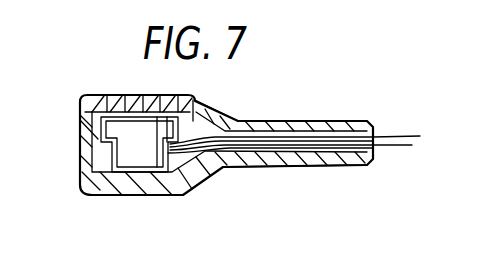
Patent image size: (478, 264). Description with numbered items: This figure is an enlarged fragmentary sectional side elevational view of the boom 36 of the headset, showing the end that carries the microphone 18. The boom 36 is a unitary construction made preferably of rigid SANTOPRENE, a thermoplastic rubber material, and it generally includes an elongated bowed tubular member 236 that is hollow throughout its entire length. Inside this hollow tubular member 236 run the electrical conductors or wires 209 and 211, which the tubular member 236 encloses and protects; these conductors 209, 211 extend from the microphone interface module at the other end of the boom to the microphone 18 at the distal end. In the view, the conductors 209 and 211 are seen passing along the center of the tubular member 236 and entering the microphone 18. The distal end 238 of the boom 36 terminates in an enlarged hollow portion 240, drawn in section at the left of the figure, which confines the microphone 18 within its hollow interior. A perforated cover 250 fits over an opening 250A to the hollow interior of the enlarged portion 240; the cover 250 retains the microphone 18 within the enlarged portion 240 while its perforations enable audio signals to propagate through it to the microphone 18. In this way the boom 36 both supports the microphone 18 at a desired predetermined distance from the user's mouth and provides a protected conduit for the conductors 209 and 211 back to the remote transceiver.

The perforated cover 250 is at (117, 96).
The opening 250A is at (80, 120).
The microphone 18 is at (120, 137).
The enlarged hollow portion 240 is at (158, 194).
The distal end 238 is at (272, 158).
The boom 36 is at (312, 116).
The elongated bowed tubular member 236 is at (392, 81).
The electrical conductor 209 is at (452, 105).
The electrical conductor 211 is at (412, 146).